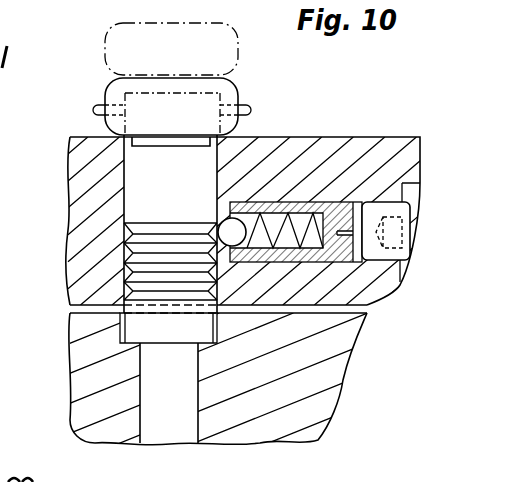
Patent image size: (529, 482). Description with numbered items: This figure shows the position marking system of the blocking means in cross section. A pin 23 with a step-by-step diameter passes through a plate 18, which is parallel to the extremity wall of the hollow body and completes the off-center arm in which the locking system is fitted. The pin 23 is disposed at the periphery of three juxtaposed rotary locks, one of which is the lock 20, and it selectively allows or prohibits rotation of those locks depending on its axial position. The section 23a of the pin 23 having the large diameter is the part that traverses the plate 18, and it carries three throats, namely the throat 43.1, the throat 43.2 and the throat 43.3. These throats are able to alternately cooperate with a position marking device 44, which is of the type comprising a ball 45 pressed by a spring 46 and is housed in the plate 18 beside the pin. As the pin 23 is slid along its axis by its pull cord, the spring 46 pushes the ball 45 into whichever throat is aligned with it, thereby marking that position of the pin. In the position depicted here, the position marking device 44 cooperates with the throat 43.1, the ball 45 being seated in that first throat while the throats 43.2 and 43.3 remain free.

The plate 18 is at (303, 148).
The lock 20 is at (310, 402).
The pin 23 is at (232, 95).
The large-diameter section of the pin 23a is at (148, 191).
The throat 43.1 is at (82, 243).
The throat 43.2 is at (68, 297).
The throat 43.3 is at (68, 316).
The position marking device 44 is at (343, 200).
The ball 45 is at (250, 262).
The spring 46 is at (322, 255).